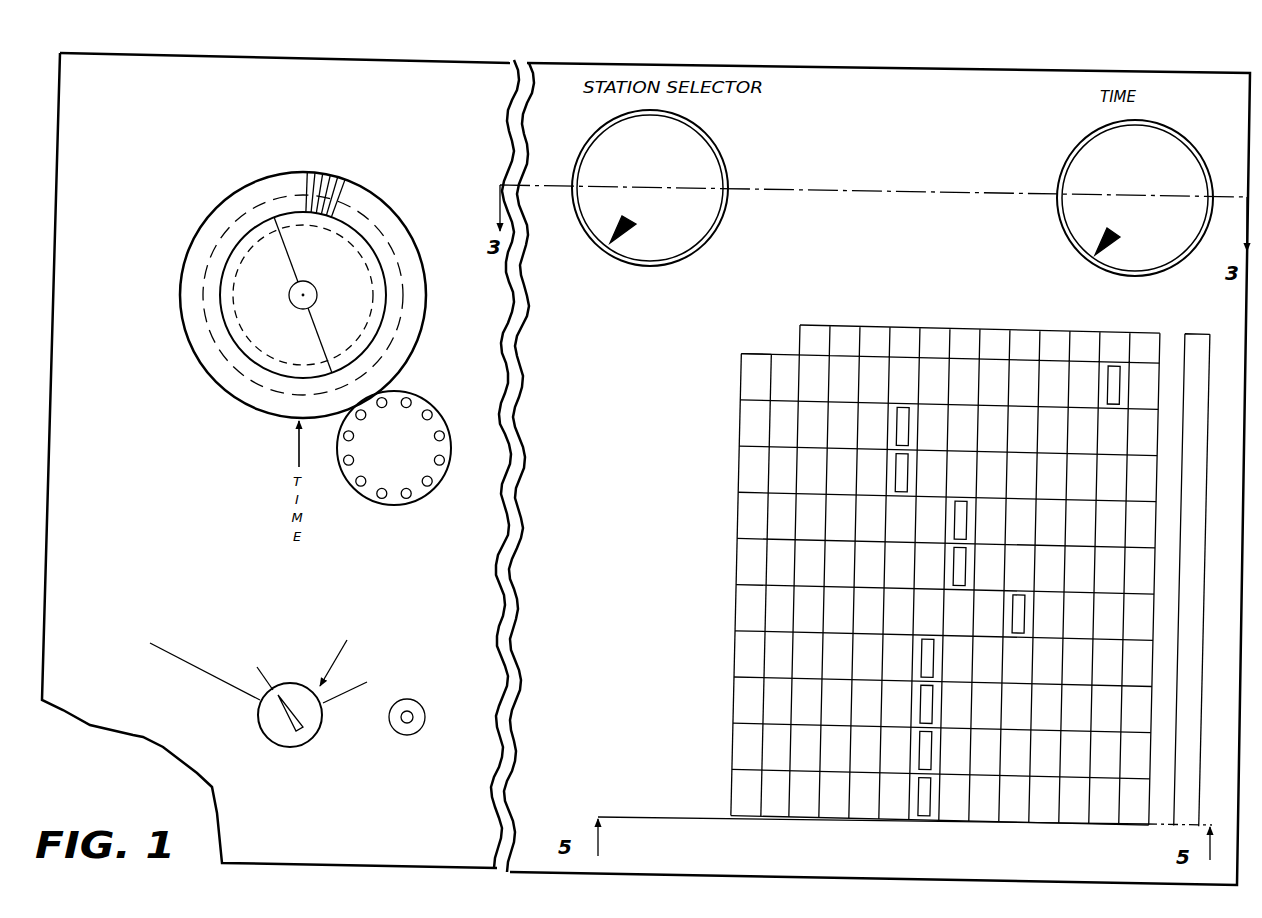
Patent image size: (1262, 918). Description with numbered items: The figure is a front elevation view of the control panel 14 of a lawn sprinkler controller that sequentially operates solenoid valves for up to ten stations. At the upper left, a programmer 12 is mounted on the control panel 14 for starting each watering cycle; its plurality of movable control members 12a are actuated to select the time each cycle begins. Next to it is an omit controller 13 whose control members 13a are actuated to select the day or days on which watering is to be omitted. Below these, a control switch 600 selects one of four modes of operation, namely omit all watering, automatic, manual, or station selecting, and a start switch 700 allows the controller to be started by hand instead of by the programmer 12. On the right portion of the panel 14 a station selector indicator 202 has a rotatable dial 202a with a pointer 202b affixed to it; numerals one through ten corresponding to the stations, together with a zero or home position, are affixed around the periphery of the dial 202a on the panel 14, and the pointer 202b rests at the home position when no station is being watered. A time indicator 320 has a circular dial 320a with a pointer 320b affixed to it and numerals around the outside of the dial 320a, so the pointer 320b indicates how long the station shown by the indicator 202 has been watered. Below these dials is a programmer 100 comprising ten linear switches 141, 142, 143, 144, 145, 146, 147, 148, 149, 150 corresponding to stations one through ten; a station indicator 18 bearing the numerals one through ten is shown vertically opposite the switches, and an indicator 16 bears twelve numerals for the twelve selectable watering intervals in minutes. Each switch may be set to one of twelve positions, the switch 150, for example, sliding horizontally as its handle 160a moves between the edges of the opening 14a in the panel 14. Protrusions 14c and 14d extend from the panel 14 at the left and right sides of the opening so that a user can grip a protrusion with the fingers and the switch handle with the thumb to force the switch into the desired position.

The programmer 12 is at (258, 172).
The movable control members 12a is at (327, 178).
The omit controller 13 is at (422, 390).
The control members 13a is at (447, 446).
The control panel 14 is at (936, 104).
The opening 14a is at (1152, 444).
The protrusion 14c is at (730, 803).
The protrusion 14d is at (1198, 712).
The indicator 16 is at (795, 333).
The station indicator 18 is at (766, 822).
The programmer 100 is at (975, 312).
The linear switch 141 is at (727, 383).
The linear switch 142 is at (727, 428).
The linear switch 143 is at (727, 474).
The linear switch 144 is at (727, 519).
The linear switch 145 is at (727, 564).
The linear switch 146 is at (727, 610).
The linear switch 147 is at (727, 655).
The linear switch 148 is at (727, 700).
The linear switch 149 is at (727, 746).
The linear switch 150 is at (727, 791).
The handle 160a is at (923, 797).
The station selector indicator 202 is at (729, 151).
The rotatable dial 202a is at (697, 226).
The pointer 202b is at (623, 260).
The time indicator 320 is at (1045, 183).
The circular dial 320a is at (1150, 257).
The pointer 320b is at (1113, 240).
The control switch 600 is at (272, 748).
The start switch 700 is at (403, 741).